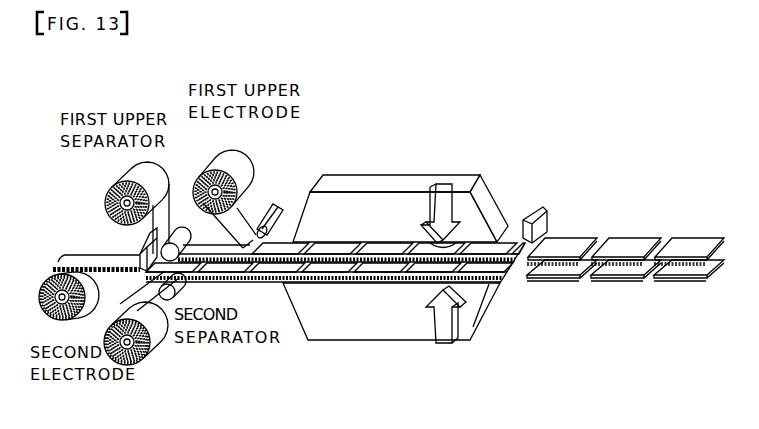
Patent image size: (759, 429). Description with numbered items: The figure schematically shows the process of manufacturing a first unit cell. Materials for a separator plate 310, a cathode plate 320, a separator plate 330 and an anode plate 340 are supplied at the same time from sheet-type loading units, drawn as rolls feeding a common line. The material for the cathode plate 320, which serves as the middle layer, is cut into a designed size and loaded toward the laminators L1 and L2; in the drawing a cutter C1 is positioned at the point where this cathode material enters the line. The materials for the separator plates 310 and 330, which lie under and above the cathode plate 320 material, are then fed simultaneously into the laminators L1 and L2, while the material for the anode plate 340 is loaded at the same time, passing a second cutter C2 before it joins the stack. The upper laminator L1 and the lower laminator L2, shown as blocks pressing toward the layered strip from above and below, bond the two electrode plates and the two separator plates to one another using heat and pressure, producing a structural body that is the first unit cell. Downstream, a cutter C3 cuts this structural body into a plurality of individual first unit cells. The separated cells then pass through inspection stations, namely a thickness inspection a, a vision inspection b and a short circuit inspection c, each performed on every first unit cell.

The separator plate 310 is at (152, 352).
The cathode plate 320 is at (57, 256).
The separator plate 330 is at (108, 193).
The anode plate 340 is at (250, 166).
The first cutter C1 is at (140, 251).
The second cutter C2 is at (276, 210).
The cutter C3 is at (538, 205).
The laminator L1 is at (390, 178).
The laminator L2 is at (380, 322).
The thickness inspection a is at (585, 288).
The vision inspection b is at (649, 288).
The short circuit inspection c is at (712, 288).